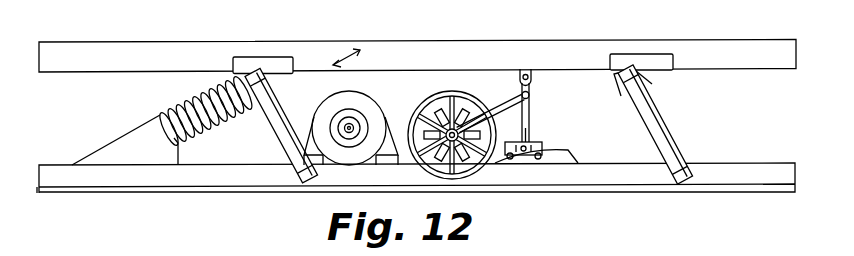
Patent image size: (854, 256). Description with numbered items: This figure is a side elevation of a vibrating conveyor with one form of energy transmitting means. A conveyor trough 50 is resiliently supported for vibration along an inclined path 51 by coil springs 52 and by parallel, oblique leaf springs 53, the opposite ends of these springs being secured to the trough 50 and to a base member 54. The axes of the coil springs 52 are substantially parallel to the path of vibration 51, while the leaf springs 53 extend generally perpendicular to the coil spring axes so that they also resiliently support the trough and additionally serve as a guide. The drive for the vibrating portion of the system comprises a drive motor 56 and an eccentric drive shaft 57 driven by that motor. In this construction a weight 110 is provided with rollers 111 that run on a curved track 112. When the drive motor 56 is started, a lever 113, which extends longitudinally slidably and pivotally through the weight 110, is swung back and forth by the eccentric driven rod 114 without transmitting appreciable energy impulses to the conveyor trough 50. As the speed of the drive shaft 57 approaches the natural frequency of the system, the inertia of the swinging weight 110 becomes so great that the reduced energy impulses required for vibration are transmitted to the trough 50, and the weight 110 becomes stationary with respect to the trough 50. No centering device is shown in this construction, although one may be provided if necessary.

The conveyor trough 50 is at (417, 62).
The inclined path 51 is at (345, 58).
The coil spring 52 is at (173, 104).
The leaf spring 53 is at (268, 122).
The base member 54 is at (232, 177).
The drive motor 56 is at (322, 108).
The eccentric drive shaft 57 is at (457, 112).
The weight 110 is at (542, 144).
The rollers 111 is at (537, 159).
The curved track 112 is at (572, 157).
The lever 113 is at (528, 118).
The eccentric driven rod 114 is at (502, 98).